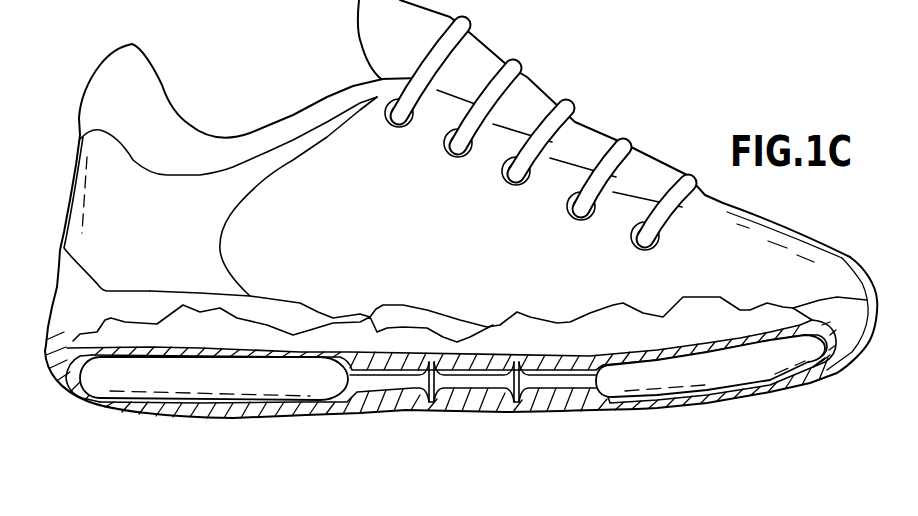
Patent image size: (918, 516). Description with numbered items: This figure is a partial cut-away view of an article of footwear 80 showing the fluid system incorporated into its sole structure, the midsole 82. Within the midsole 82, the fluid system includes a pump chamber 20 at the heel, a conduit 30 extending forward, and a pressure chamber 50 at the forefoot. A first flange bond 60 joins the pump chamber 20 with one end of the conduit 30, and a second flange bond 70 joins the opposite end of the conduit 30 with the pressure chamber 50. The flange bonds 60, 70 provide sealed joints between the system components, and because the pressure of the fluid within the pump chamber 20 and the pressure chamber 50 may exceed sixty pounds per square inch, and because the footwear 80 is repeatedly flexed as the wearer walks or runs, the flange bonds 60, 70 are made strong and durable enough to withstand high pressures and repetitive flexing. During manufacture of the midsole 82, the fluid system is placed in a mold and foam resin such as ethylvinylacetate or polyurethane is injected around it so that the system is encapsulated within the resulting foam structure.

The pump chamber 20 is at (204, 373).
The conduit 30 is at (468, 395).
The pressure chamber 50 is at (708, 368).
The first flange bond 60 is at (430, 403).
The second flange bond 70 is at (515, 403).
The article of footwear 80 is at (664, 144).
The midsole 82 is at (562, 401).